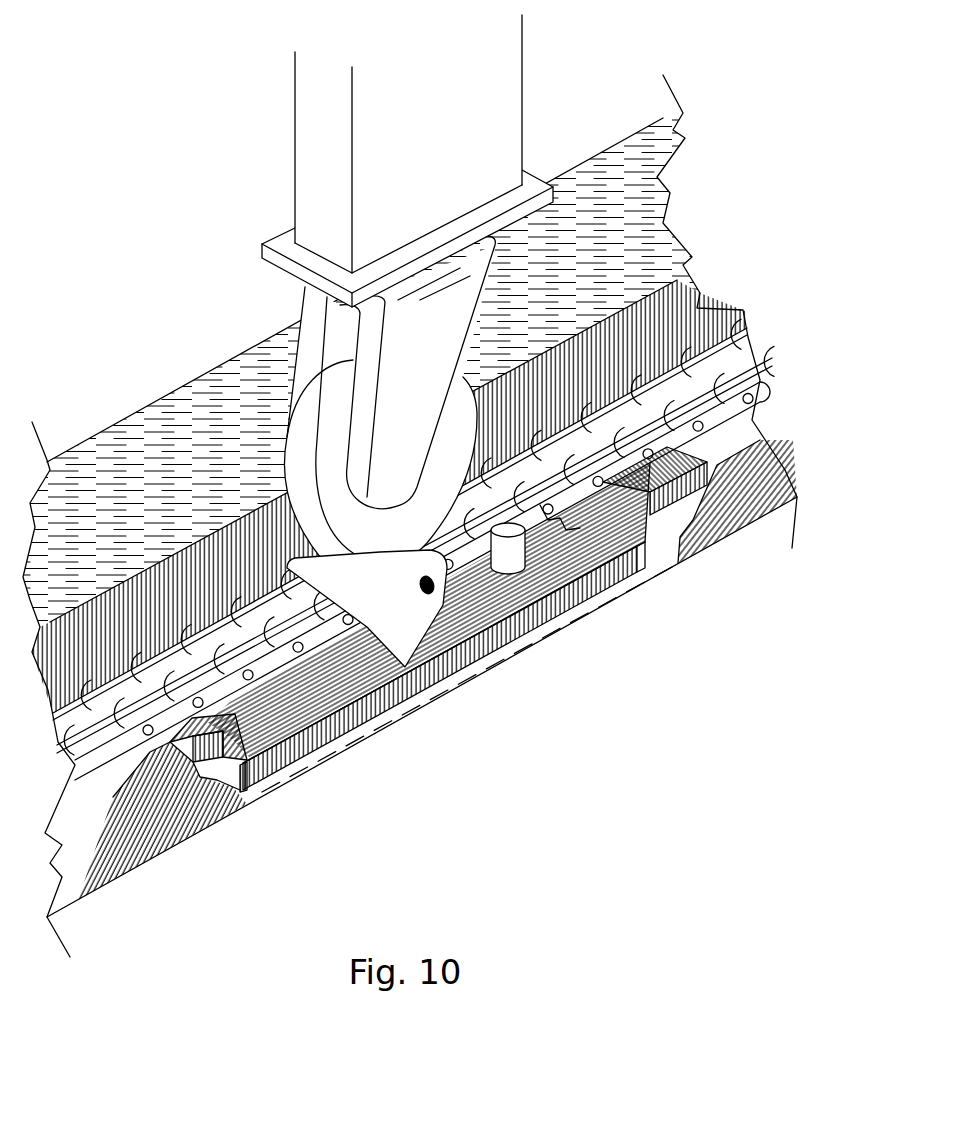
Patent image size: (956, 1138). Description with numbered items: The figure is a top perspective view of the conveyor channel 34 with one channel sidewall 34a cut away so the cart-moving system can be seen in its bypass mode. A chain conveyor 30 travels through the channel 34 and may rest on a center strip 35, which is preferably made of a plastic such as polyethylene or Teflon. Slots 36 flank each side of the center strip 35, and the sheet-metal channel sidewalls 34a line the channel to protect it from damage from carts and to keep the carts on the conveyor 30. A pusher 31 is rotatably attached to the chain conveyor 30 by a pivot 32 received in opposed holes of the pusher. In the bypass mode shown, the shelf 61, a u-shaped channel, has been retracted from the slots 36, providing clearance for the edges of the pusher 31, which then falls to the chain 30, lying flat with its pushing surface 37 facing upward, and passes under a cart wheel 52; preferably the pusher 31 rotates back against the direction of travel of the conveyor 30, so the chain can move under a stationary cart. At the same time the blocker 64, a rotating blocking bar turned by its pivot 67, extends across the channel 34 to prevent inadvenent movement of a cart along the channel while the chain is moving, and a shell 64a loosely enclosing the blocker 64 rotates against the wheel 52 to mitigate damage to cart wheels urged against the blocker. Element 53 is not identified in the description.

The chain conveyor 30 is at (260, 790).
The pusher 31 is at (288, 560).
The pivot 32 is at (403, 655).
The conveyor channel 34 is at (715, 294).
The channel sidewall 34a is at (232, 372).
The center strip 35 is at (320, 712).
The slots 36 is at (305, 710).
The pushing surface 37 is at (508, 572).
The wheel 52 is at (463, 427).
The column 53 is at (472, 58).
The shelf 61 is at (480, 640).
The blocker 64 is at (645, 510).
The shell 64a is at (548, 520).
The pivot 67 is at (612, 628).